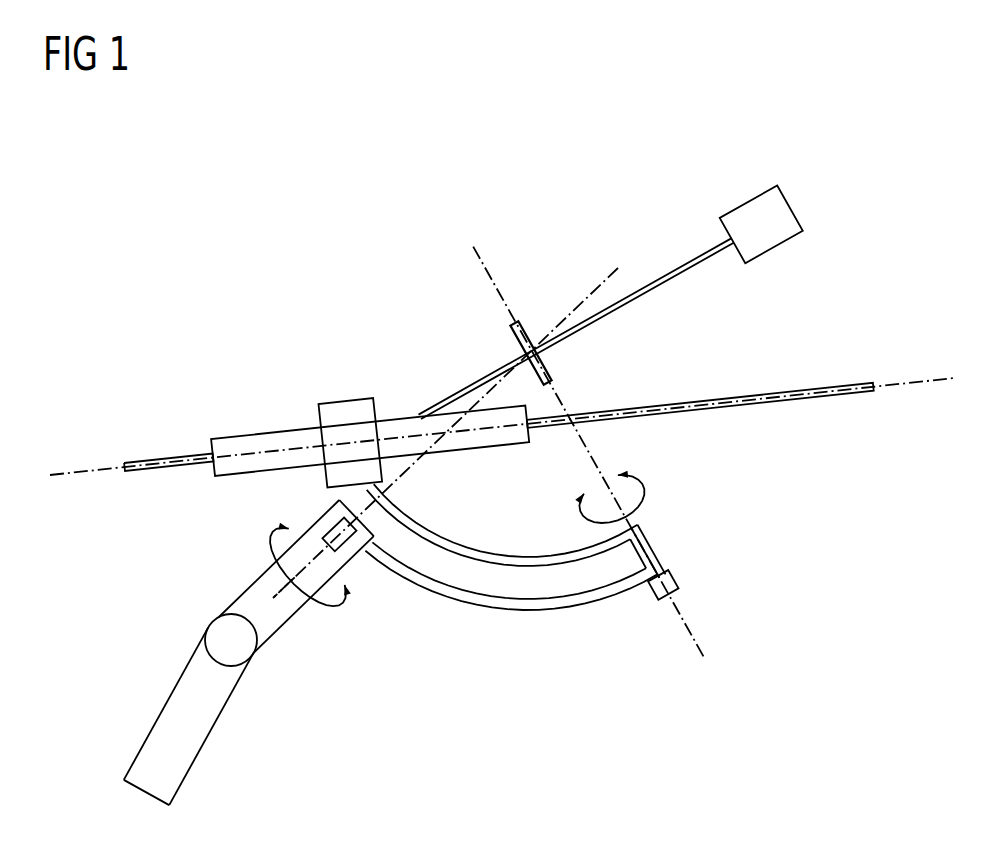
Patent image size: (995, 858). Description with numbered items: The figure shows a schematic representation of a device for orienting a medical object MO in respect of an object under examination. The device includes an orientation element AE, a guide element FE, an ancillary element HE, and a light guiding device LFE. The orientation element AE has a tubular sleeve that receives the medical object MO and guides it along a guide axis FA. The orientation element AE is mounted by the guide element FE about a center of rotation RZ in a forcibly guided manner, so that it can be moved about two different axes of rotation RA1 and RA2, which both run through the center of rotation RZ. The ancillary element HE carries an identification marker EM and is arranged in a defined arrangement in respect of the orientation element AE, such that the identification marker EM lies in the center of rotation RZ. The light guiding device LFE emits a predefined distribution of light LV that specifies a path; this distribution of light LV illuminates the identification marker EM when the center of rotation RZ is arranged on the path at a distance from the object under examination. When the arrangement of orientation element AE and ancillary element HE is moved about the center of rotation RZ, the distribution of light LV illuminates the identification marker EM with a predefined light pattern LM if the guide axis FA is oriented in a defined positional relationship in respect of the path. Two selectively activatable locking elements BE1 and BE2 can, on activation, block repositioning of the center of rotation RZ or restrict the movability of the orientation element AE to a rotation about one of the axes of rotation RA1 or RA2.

The guide axis FA is at (936, 378).
The medical object MO is at (803, 383).
The orientation element AE is at (258, 433).
The ancillary element HE is at (428, 410).
The first axis of rotation RA1 is at (494, 272).
The second axis of rotation RA2 is at (591, 294).
The predefined distribution of light LV is at (672, 268).
The light guiding device LFE is at (795, 206).
The identification marker EM is at (514, 345).
The center of rotation RZ is at (537, 330).
The predefined light pattern LM is at (553, 361).
The guide element FE is at (518, 613).
The first locking element BE1 is at (680, 582).
The second locking element BE2 is at (356, 552).